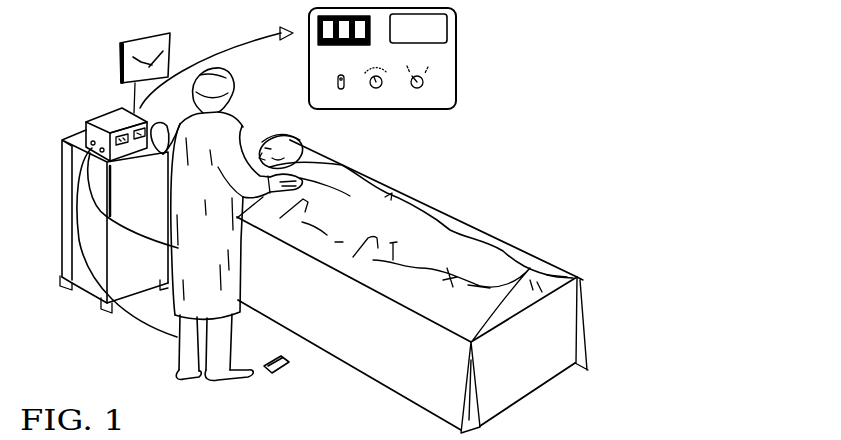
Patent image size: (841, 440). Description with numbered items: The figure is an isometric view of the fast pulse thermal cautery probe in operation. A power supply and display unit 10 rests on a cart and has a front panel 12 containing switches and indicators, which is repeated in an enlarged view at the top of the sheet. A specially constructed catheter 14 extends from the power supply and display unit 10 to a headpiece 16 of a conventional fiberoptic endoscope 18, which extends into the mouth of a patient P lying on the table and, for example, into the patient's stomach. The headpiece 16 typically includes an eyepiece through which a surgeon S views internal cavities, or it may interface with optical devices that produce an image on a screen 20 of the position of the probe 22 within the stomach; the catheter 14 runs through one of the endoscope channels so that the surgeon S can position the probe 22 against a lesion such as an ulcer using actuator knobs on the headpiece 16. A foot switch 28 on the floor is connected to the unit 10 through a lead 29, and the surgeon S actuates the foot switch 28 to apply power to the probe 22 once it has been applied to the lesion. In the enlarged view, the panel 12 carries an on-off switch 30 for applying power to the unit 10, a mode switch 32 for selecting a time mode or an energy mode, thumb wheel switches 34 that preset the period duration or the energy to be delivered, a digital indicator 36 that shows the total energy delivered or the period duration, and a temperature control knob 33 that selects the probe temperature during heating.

The power supply and display unit 10 is at (98, 118).
The front panel 12 is at (132, 151).
The catheter 14 is at (139, 238).
The headpiece 16 is at (268, 160).
The fiberoptic endoscope 18 is at (288, 140).
The screen 20 is at (168, 48).
The probe 22 is at (141, 42).
The foot switch 28 is at (281, 374).
The lead 29 is at (147, 328).
The on-off switch 30 is at (344, 86).
The mode switch 32 is at (423, 82).
The temperature control knob 33 is at (382, 82).
The thumb wheel switches 34 is at (319, 40).
The digital indicator 36 is at (448, 24).
The surgeon S is at (230, 133).
The patient P is at (345, 170).